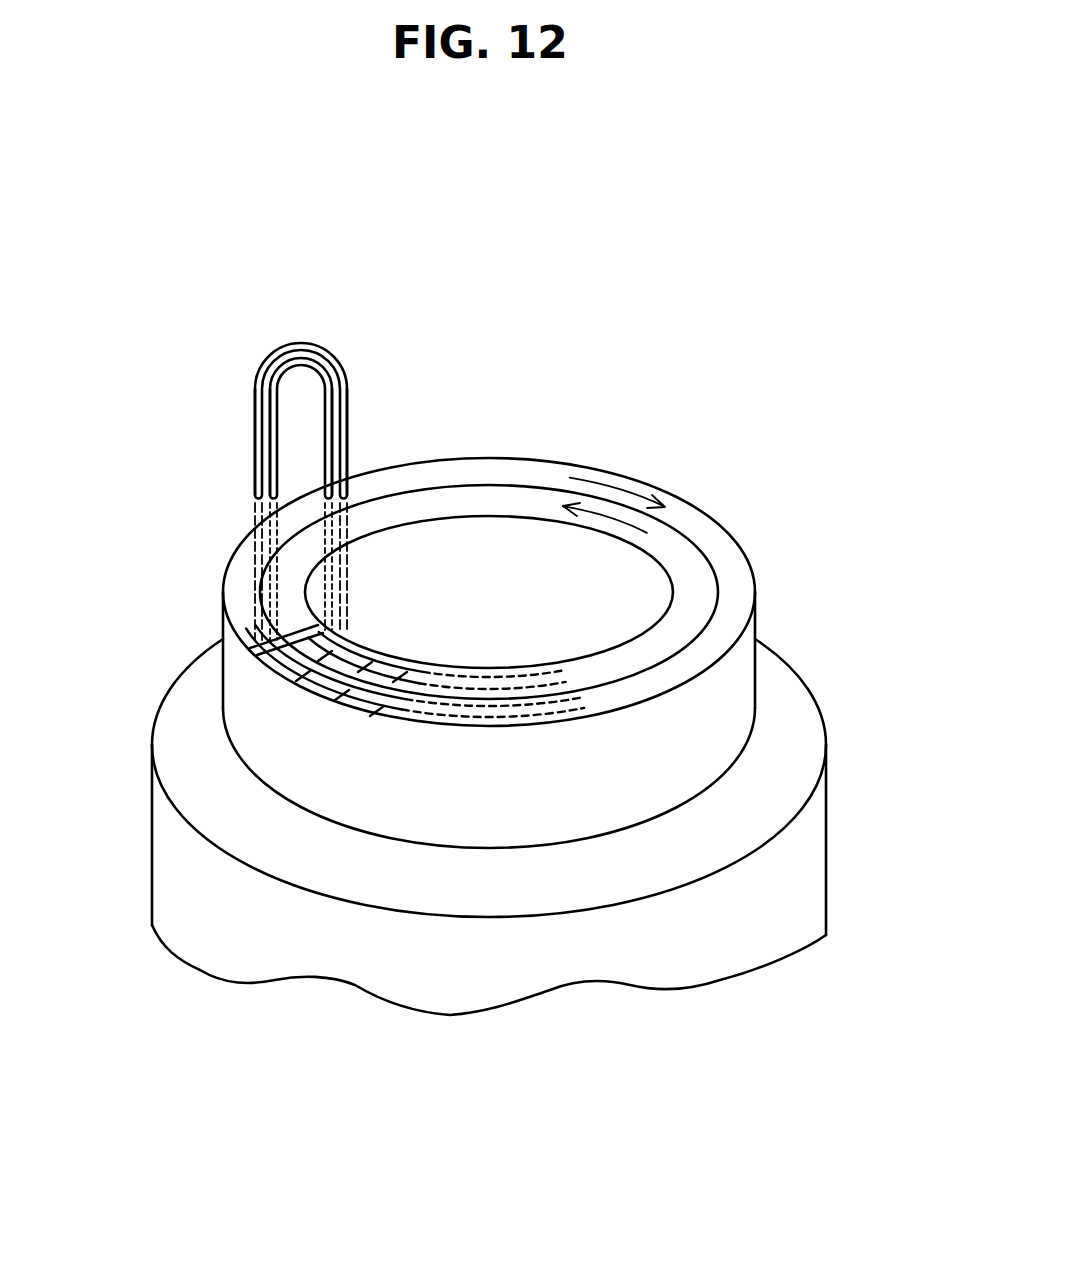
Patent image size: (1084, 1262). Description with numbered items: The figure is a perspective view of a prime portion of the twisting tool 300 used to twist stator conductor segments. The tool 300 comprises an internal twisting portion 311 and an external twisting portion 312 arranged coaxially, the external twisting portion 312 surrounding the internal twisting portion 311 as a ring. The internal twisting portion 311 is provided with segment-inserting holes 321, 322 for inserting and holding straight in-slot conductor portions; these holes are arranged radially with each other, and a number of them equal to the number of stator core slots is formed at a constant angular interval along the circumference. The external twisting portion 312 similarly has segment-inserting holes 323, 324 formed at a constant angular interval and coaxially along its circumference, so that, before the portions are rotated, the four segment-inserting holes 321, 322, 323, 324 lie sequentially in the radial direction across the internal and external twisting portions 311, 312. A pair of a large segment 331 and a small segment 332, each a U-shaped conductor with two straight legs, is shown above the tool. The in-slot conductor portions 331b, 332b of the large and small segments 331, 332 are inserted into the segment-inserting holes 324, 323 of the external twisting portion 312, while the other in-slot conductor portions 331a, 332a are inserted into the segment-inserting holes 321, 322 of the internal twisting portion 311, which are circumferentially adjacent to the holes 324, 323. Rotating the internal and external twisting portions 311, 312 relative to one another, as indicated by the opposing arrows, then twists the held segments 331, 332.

The rotary body / sensor mounting structure 300 is at (576, 437).
The internal twisting portion 311 is at (693, 579).
The external twisting portion 312 is at (740, 596).
The segment-inserting hole 321 is at (392, 667).
The segment-inserting hole 322 is at (392, 686).
The segment-inserting hole 323 is at (380, 698).
The segment-inserting hole 324 is at (385, 698).
The large segment 331 is at (297, 348).
The small segment 332 is at (303, 357).
The in-slot conductor portion 331a is at (347, 401).
The in-slot conductor portion 331b is at (257, 402).
The in-slot conductor portion 332a is at (333, 440).
The in-slot conductor portion 332b is at (273, 450).